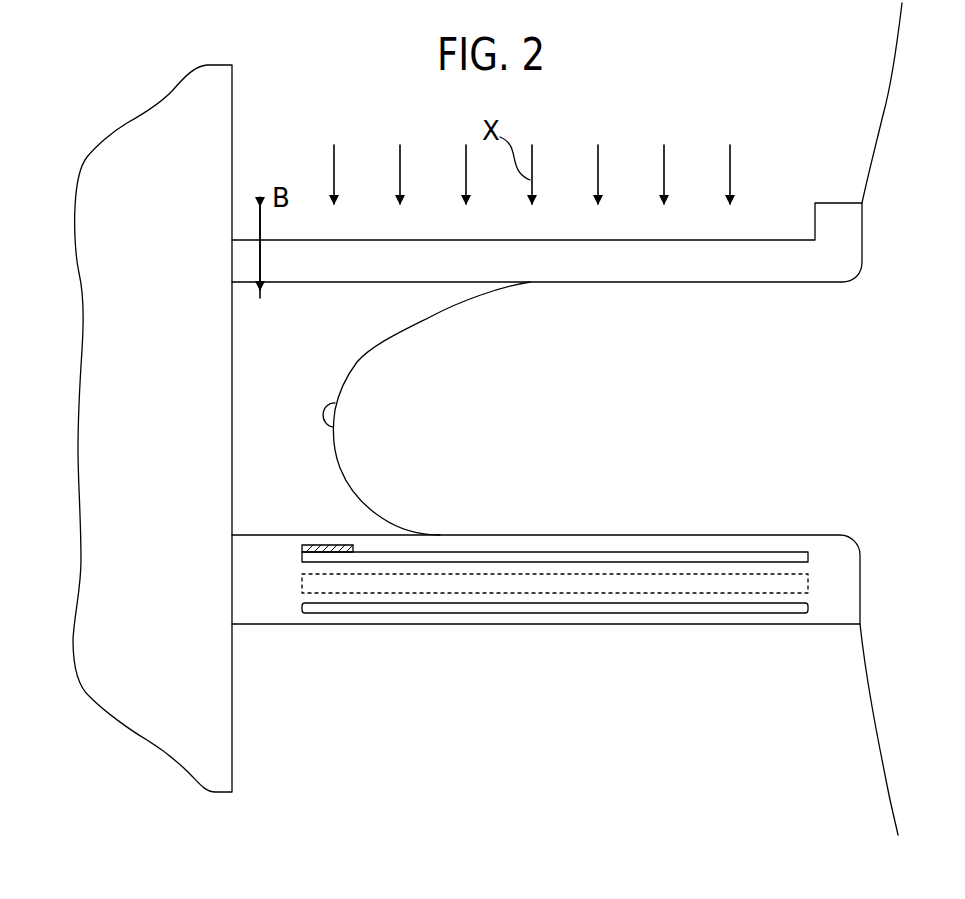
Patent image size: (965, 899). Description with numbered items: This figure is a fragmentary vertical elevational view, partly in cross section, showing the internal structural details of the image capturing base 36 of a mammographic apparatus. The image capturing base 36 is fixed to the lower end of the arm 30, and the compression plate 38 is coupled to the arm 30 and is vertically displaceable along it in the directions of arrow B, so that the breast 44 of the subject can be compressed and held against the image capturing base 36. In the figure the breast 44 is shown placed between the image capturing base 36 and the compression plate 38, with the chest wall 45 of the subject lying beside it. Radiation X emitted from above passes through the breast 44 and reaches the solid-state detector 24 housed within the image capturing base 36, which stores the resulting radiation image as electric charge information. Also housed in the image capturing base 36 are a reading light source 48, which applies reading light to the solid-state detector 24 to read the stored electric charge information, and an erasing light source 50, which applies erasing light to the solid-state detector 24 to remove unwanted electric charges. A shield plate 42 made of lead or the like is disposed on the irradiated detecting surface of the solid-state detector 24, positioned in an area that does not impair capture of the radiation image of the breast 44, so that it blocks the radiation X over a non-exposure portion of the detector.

The solid-state detector 24 is at (491, 551).
The arm 30 is at (101, 411).
The image capturing base 36 is at (775, 655).
The compression plate 38 is at (828, 226).
The shield plate 42 is at (321, 545).
The breast 44 is at (368, 370).
The chest wall 45 is at (888, 110).
The reading light source 48 is at (609, 582).
The erasing light source 50 is at (487, 608).